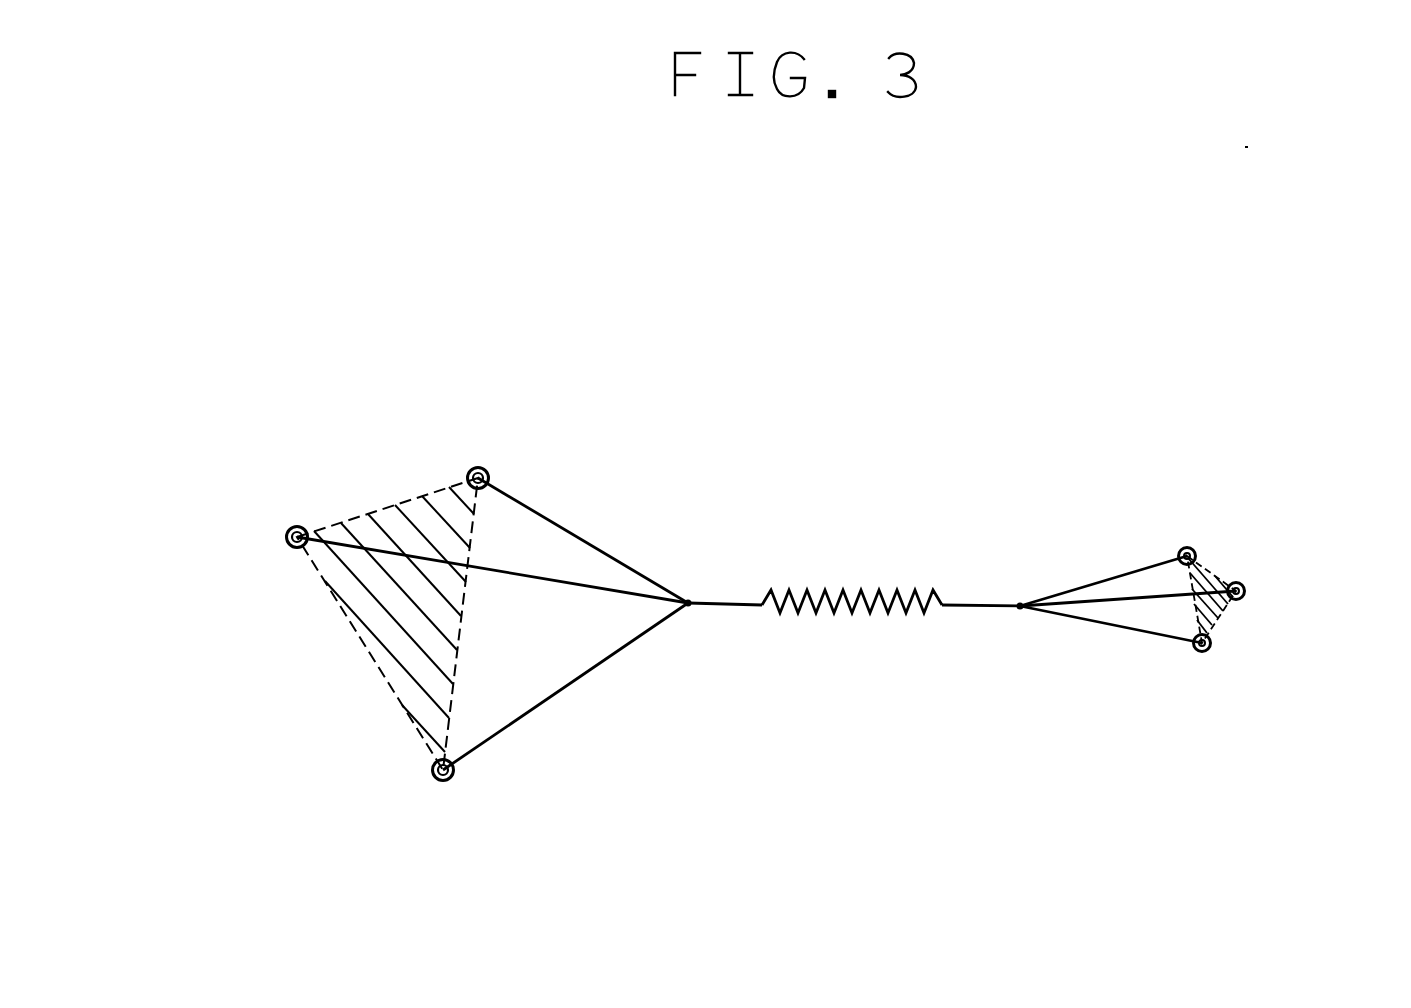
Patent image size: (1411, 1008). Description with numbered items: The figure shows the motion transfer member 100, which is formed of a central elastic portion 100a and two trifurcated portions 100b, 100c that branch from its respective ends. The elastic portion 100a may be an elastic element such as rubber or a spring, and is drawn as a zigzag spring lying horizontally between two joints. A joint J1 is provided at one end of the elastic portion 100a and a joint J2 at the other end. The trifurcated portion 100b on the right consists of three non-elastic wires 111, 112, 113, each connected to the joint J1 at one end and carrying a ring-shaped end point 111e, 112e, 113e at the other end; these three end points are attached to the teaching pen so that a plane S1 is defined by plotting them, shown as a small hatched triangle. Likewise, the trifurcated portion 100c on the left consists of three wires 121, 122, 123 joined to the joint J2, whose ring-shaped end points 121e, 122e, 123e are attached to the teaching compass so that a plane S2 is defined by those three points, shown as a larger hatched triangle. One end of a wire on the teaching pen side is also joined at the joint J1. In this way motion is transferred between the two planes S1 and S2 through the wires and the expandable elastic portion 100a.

The motion transfer member 100 is at (975, 332).
The elastic portion 100a is at (877, 560).
The trifurcated portion 100b is at (1113, 513).
The trifurcated portion 100c is at (588, 512).
The joint J1 is at (1020, 604).
The joint J2 is at (691, 602).
The wire 111 is at (1211, 574).
The ring-shaped end point 111e is at (1245, 595).
The wire 112 is at (1148, 636).
The ring-shaped end point 112e is at (1204, 653).
The wire 113 is at (1138, 570).
The ring-shaped end point 113e is at (1196, 549).
The plane S1 is at (1212, 610).
The wire 121 is at (373, 553).
The ring-shaped end point 121e is at (286, 537).
The wire 122 is at (533, 503).
The ring-shaped end point 122e is at (470, 470).
The wire 123 is at (557, 697).
The ring-shaped end point 123e is at (432, 774).
The plane S2 is at (373, 627).